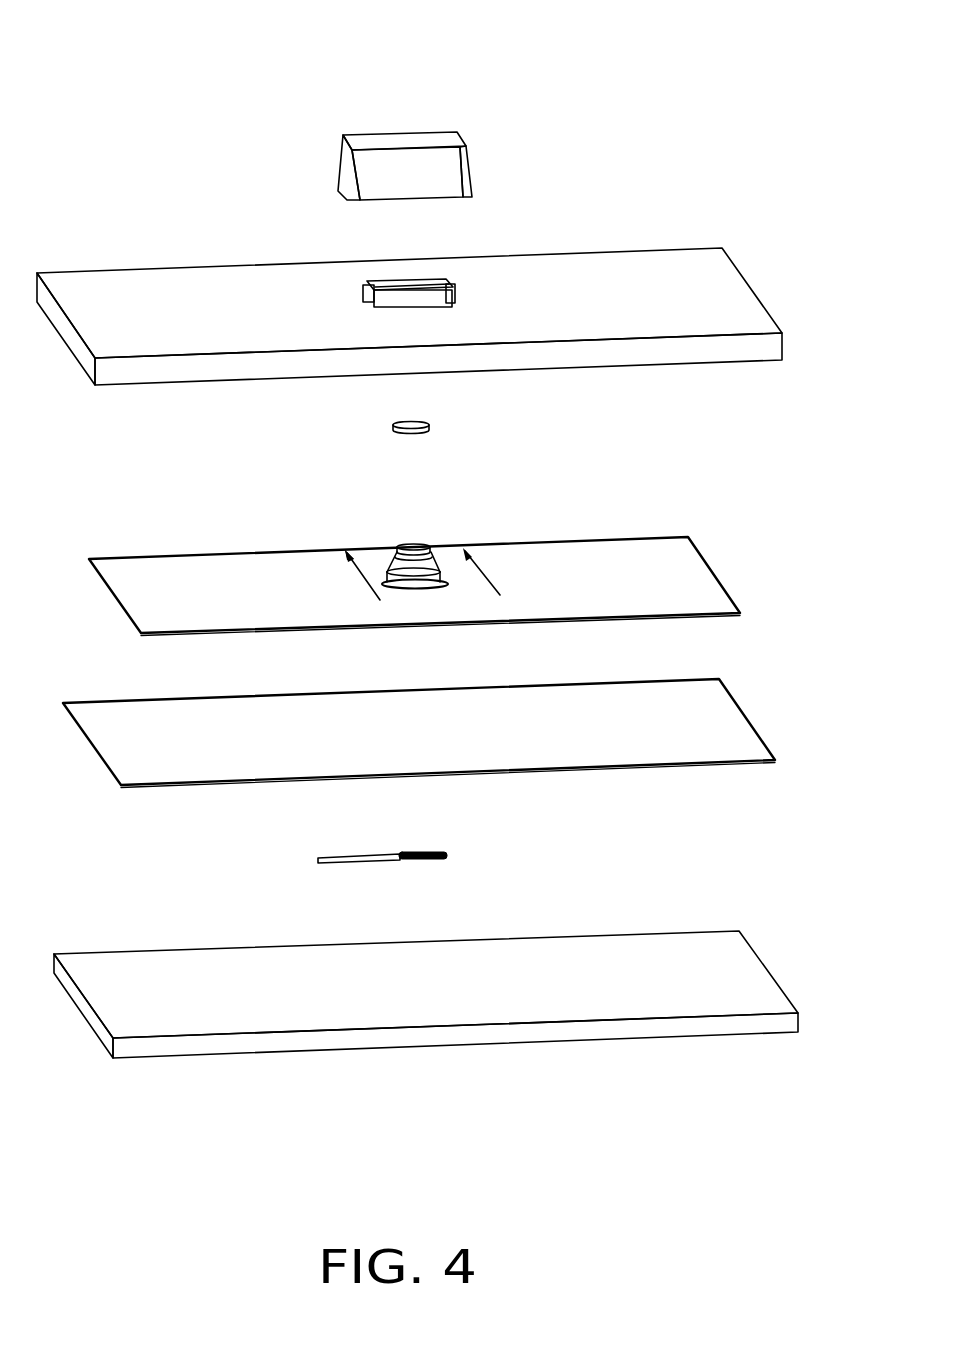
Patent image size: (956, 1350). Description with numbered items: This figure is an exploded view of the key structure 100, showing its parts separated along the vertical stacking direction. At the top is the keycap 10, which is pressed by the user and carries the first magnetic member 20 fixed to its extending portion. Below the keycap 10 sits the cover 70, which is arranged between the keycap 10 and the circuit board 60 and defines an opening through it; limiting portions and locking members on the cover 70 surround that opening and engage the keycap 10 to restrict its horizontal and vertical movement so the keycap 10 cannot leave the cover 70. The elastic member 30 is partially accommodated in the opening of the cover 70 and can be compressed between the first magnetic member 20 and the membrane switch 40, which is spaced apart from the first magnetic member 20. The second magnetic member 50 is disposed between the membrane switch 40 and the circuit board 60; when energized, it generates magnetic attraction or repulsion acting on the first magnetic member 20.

The key structure 100 is at (460, 39).
The keycap 10 is at (447, 167).
The cover 70 is at (745, 297).
The first magnetic member 20 is at (431, 428).
The elastic member 30 is at (697, 572).
The membrane switch 40 is at (717, 710).
The second magnetic member 50 is at (450, 856).
The circuit board 60 is at (753, 973).